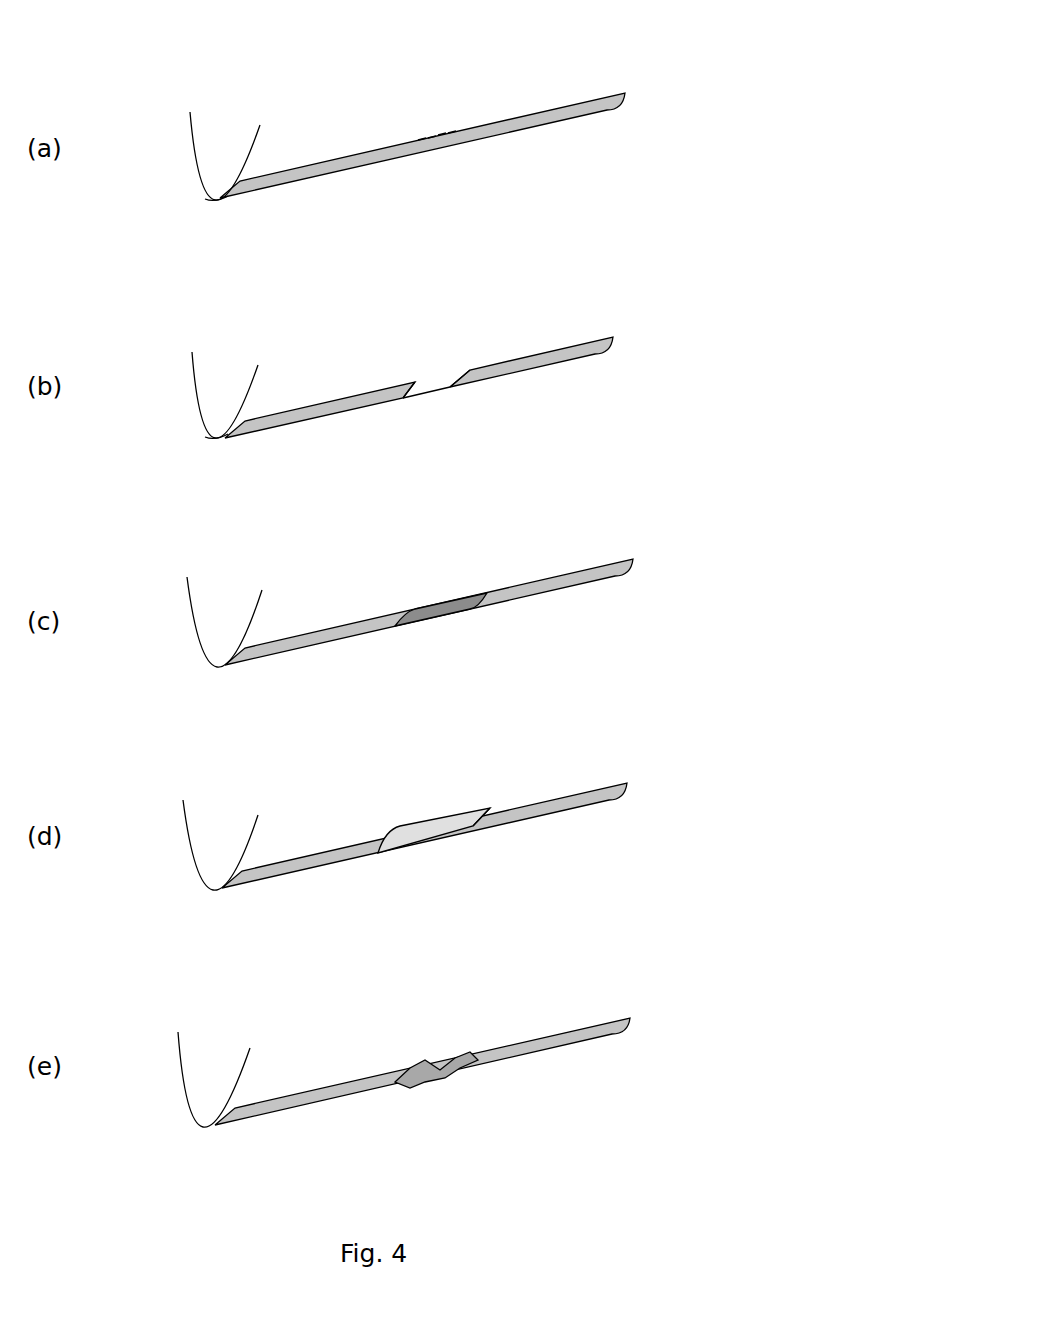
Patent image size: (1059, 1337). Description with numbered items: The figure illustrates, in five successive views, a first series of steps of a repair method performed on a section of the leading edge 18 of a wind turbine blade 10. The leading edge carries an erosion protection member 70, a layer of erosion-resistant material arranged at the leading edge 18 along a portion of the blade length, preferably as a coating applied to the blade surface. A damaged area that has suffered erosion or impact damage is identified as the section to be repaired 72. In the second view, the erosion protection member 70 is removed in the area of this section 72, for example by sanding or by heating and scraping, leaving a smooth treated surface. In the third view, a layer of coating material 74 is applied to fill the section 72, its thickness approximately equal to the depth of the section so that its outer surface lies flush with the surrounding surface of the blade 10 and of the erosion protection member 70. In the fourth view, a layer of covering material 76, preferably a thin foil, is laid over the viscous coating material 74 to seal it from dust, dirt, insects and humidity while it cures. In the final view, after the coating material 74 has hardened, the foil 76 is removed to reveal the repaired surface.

The wind turbine blade 10 is at (210, 148).
The leading edge 18 is at (222, 199).
The erosion protection member 70 is at (608, 103).
The section to be repaired 72 is at (458, 107).
The layer of coating material 74 is at (433, 610).
The layer of covering material 76 is at (475, 822).